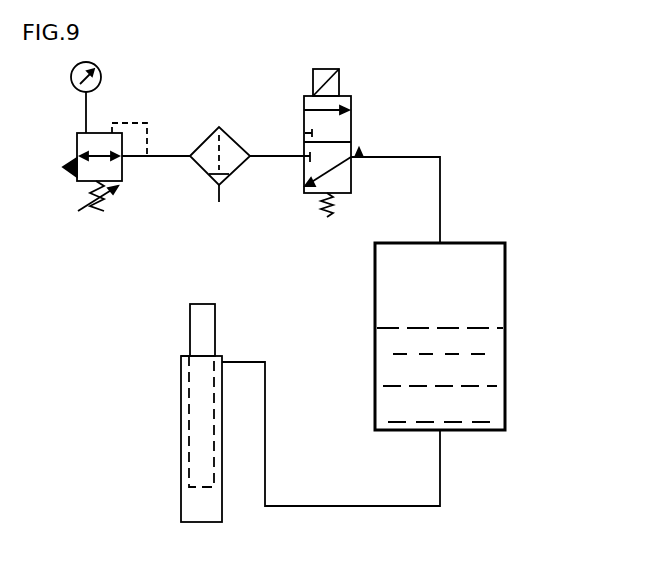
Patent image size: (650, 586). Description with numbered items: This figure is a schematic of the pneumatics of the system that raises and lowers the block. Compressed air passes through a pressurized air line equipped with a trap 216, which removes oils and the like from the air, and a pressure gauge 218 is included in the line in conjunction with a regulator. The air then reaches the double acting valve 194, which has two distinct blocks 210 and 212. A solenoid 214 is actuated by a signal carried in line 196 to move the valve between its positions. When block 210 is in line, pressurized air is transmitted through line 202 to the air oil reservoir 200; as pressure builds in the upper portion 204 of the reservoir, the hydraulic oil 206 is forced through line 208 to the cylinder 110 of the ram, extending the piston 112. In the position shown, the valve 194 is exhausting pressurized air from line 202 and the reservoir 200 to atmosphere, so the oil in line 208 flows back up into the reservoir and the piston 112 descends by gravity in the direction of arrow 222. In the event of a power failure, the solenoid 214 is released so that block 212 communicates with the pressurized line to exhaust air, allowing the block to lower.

The pressure gauge 218 is at (95, 64).
The trap 216 is at (204, 147).
The line 196 is at (358, 121).
The solenoid 214 is at (327, 75).
The block 210 is at (347, 127).
The block 212 is at (342, 178).
The double acting valve 194 is at (365, 150).
The line 202 is at (440, 192).
The air oil reservoir 200 is at (488, 336).
The upper portion 204 is at (480, 285).
The hydraulic oil 206 is at (488, 403).
The line 208 is at (358, 507).
The cylinder 110 is at (205, 502).
The piston 112 is at (207, 323).
The arrow 222 is at (186, 350).